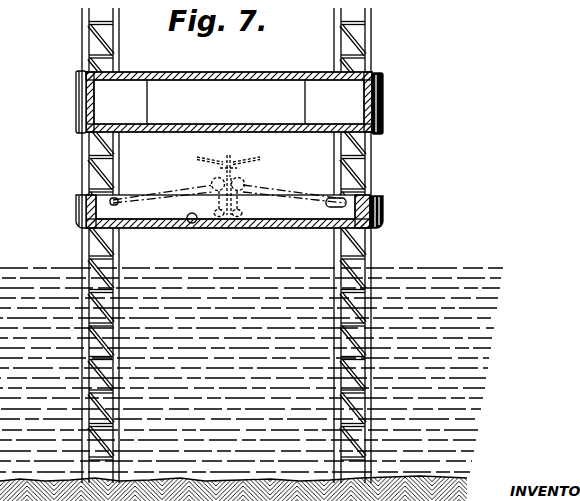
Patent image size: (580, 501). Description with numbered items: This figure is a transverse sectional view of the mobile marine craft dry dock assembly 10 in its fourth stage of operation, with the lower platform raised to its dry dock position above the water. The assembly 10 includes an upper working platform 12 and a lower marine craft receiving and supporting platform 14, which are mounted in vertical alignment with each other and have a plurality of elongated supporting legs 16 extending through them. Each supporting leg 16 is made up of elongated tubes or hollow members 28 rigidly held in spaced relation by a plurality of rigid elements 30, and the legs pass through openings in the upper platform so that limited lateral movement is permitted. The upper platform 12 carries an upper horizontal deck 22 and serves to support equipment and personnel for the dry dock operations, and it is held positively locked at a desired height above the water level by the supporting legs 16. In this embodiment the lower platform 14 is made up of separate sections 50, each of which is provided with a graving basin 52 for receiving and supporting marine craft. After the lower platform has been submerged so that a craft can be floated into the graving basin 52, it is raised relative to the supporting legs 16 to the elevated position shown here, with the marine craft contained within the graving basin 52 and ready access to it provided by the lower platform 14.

The mobile marine craft dry dock assembly 10 is at (261, 245).
The upper working platform 12 is at (394, 87).
The lower marine craft receiving and supporting platform 14 is at (394, 209).
The elongated supporting legs 16 is at (75, 34).
The upper horizontal deck 22 is at (213, 72).
The elongated tubes or hollow members 28 is at (88, 147).
The rigid elements 30 is at (92, 250).
The separate sections 50 is at (88, 213).
The graving basin 52 is at (192, 224).